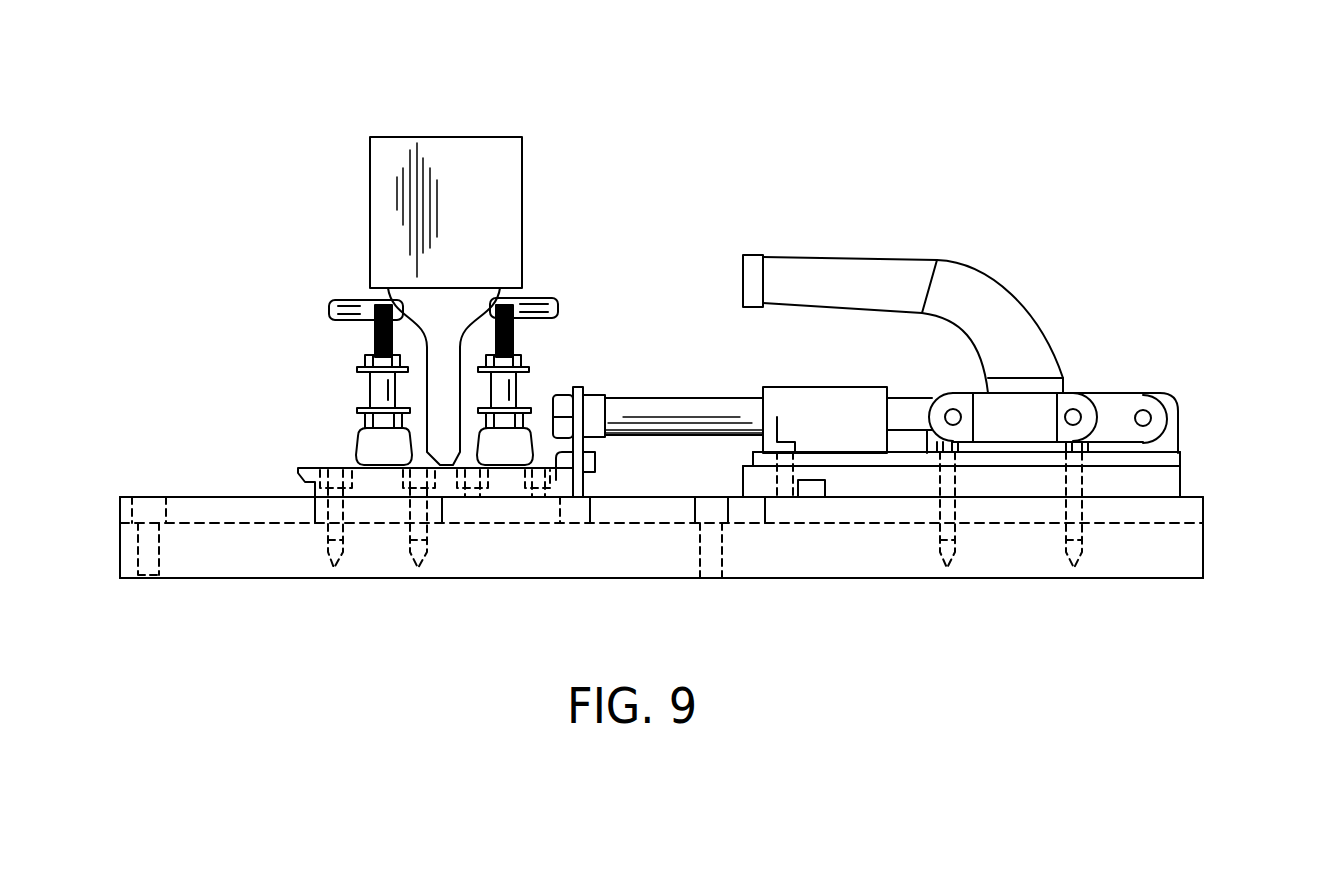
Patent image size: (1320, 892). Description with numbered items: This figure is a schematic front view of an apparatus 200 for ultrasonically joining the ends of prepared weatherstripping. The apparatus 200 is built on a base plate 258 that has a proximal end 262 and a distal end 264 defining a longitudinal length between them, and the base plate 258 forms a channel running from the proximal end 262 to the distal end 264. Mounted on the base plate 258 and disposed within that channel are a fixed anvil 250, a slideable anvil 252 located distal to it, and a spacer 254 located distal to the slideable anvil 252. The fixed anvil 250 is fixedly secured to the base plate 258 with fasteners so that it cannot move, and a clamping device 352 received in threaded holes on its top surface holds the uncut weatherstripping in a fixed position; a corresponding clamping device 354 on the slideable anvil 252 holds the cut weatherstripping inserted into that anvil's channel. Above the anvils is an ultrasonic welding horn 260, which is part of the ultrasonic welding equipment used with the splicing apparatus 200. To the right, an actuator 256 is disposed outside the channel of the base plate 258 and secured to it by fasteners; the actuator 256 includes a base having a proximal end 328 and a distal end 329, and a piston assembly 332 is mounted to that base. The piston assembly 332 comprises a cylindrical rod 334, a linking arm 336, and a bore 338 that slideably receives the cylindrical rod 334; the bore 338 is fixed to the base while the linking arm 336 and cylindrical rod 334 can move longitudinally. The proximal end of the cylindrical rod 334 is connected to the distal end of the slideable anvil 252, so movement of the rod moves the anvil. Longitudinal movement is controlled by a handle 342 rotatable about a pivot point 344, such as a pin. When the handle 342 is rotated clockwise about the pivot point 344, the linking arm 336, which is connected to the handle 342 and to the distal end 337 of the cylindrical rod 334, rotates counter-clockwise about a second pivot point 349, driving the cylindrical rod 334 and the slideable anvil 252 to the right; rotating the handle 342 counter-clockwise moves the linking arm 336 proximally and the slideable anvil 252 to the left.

The apparatus 200 is at (1077, 150).
The ultrasonic welding horn 260 is at (420, 137).
The clamping device 354 is at (537, 298).
The clamping device 352 is at (334, 304).
The slideable anvil 252 is at (552, 298).
The handle 342 is at (848, 257).
The linking arm 336 is at (1028, 395).
The actuator 256 is at (1068, 393).
The second pivot point 349 is at (1080, 395).
The pivot point 344 is at (1145, 415).
The piston assembly 332 is at (675, 398).
The bore 338 is at (860, 398).
The distal end of the cylindrical rod 337 is at (953, 408).
The fixed anvil 250 is at (305, 470).
The cylindrical rod 334 is at (665, 435).
The proximal end of the base 328 is at (757, 442).
The proximal end 262 is at (120, 513).
The distal end of the base 329 is at (1180, 460).
The distal end 264 is at (1180, 482).
The base plate 258 is at (280, 577).
The spacer 254 is at (635, 510).